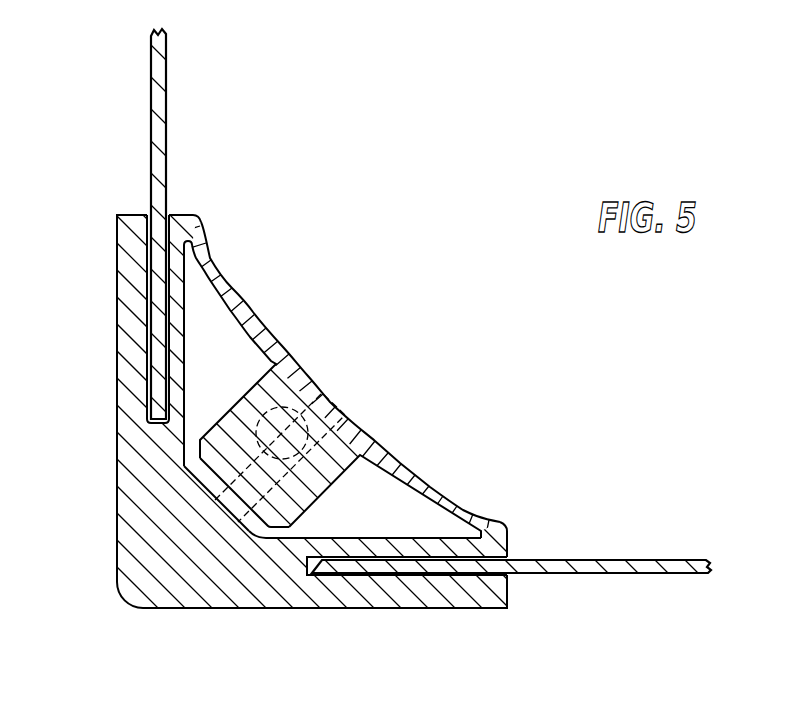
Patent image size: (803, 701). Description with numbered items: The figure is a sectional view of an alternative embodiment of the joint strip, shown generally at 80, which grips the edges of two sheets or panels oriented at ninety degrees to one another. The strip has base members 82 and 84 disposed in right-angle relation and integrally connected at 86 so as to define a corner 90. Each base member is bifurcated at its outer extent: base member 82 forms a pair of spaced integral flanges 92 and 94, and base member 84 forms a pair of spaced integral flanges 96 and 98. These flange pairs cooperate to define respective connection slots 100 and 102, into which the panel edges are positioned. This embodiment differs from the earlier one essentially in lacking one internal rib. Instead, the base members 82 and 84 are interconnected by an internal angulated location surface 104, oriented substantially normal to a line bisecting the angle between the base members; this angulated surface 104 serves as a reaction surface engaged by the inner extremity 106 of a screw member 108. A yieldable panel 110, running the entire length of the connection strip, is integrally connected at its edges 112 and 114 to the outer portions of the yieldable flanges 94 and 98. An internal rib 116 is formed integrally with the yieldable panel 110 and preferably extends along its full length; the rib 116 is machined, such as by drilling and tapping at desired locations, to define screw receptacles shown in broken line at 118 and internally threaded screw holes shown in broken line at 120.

The alternative embodiment 80 is at (365, 219).
The base member 82 is at (145, 437).
The base member 84 is at (270, 587).
The integral connection 86 is at (178, 553).
The corner 90 is at (121, 592).
The integral flange 92 is at (130, 272).
The yieldable flange 94 is at (178, 270).
The integral flange 96 is at (440, 592).
The yieldable flange 98 is at (443, 547).
The connection slot 100 is at (170, 214).
The connection slot 102 is at (512, 557).
The angulated location surface 104 is at (240, 545).
The inner extremity 106 is at (227, 510).
The screw member 108 is at (225, 483).
The yieldable panel 110 is at (243, 312).
The edge 112 is at (192, 220).
The edge 114 is at (498, 530).
The internal rib 116 is at (377, 468).
The screw receptacle 118 is at (328, 415).
The internally threaded screw hole 120 is at (262, 400).